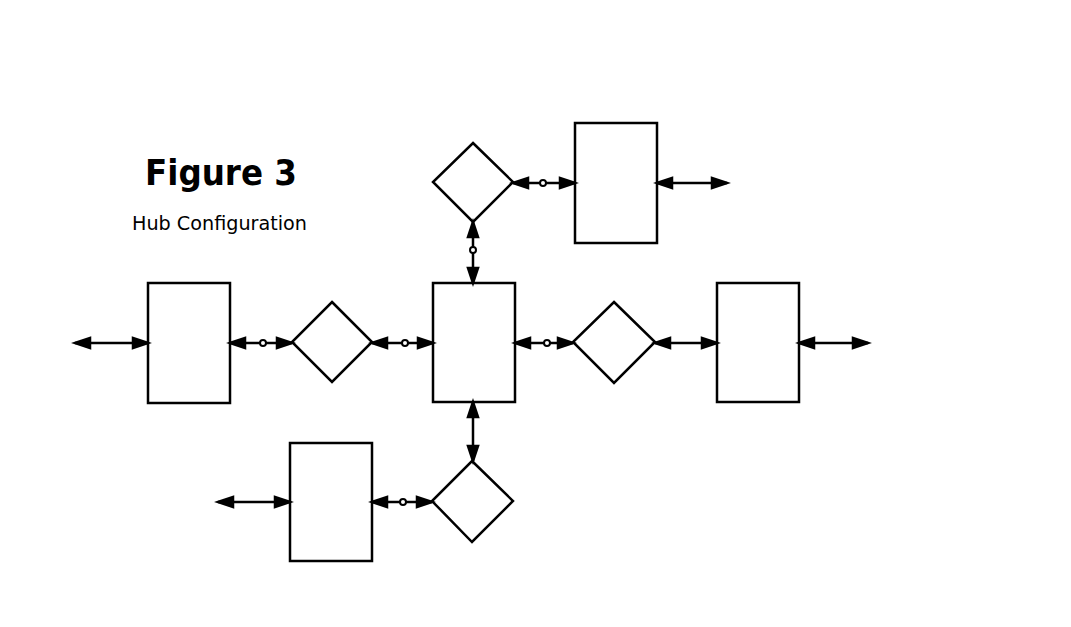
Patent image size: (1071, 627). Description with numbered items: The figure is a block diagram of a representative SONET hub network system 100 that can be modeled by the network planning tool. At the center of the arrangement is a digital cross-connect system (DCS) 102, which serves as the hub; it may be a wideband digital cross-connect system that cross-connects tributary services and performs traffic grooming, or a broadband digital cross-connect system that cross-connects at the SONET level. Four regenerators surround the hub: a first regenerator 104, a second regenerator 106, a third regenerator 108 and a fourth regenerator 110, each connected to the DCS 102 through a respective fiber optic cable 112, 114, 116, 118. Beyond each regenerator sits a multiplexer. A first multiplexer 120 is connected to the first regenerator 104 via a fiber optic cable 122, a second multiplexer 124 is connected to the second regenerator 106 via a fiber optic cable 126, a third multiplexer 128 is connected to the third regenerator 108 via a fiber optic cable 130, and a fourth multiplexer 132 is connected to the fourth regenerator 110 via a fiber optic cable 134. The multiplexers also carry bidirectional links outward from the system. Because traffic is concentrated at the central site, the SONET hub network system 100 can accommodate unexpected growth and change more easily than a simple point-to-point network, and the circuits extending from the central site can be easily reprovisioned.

The SONET hub network system 100 is at (682, 94).
The digital cross-connect system 102 is at (503, 385).
The first regenerator 104 is at (335, 308).
The second regenerator 106 is at (472, 145).
The third regenerator 108 is at (622, 313).
The fourth regenerator 110 is at (503, 500).
The fiber optic cable 112 is at (405, 346).
The fiber optic cable 114 is at (476, 250).
The fiber optic cable 116 is at (547, 340).
The fiber optic cable 118 is at (467, 429).
The first multiplexer 120 is at (170, 392).
The fiber optic cable 122 is at (263, 346).
The second multiplexer 124 is at (598, 127).
The fiber optic cable 126 is at (543, 180).
The third multiplexer 128 is at (768, 393).
The fiber optic cable 130 is at (683, 343).
The fourth multiplexer 132 is at (337, 552).
The fiber optic cable 134 is at (403, 505).